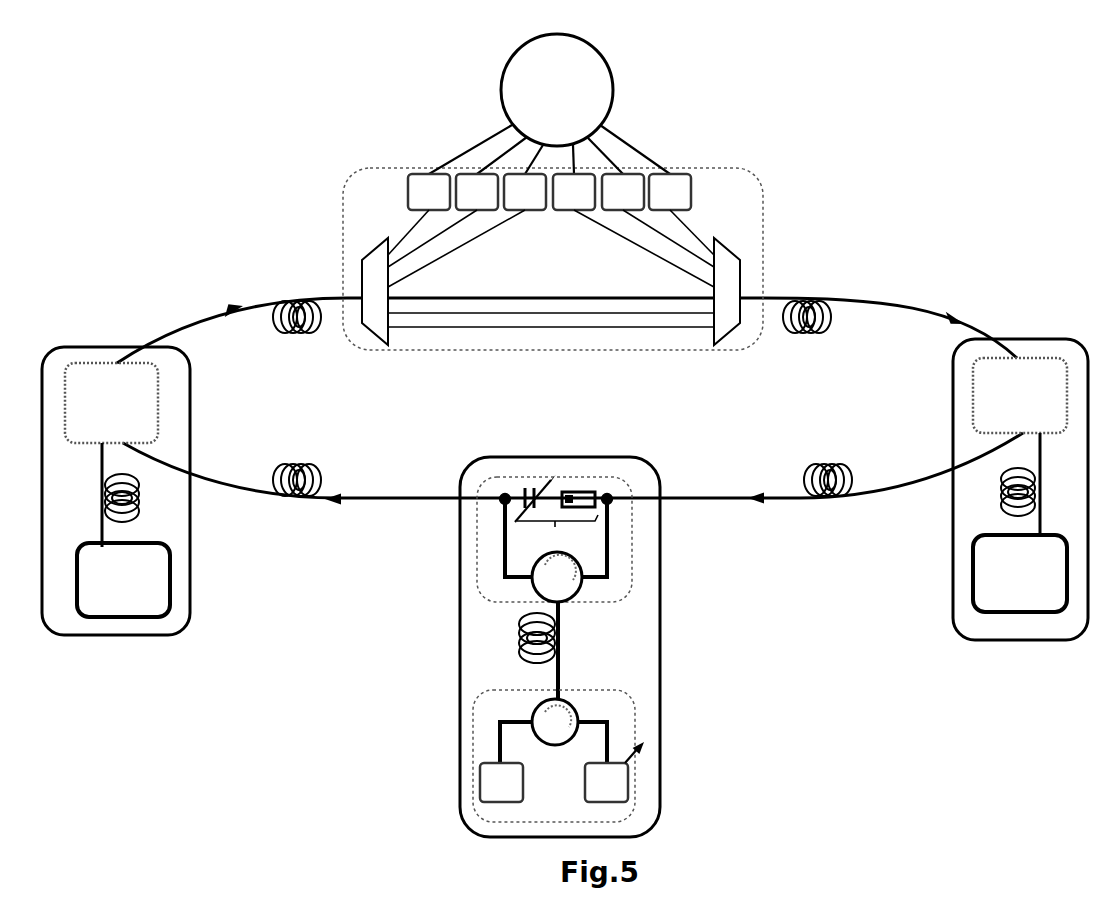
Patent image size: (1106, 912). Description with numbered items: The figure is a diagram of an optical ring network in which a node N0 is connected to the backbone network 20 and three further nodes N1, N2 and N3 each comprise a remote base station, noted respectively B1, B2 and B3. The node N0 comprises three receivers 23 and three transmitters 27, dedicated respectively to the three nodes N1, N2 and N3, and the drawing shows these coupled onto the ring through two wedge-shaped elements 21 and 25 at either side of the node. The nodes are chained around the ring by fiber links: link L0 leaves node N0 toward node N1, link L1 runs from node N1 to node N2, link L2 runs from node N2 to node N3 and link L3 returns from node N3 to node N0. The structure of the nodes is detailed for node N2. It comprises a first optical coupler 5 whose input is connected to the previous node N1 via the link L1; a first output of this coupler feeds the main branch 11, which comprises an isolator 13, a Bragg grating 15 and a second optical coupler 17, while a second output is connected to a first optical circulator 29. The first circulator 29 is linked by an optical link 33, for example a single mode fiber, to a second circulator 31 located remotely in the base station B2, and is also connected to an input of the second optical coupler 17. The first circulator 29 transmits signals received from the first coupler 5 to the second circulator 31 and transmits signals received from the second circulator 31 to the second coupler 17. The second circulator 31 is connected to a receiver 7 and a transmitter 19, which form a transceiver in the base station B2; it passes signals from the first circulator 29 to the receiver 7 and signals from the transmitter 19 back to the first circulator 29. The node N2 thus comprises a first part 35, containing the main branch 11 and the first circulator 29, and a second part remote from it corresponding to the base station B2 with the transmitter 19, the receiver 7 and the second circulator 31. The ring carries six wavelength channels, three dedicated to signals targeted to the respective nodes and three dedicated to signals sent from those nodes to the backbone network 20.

The first optical coupler 5 is at (606, 493).
The receiver 7 is at (480, 783).
The main branch 11 is at (557, 532).
The isolator 13 is at (573, 492).
The Bragg grating 15 is at (536, 489).
The second optical coupler 17 is at (504, 493).
The transmitter 19 is at (628, 773).
The backbone network 20 is at (605, 53).
The optical multiplexer 21 is at (366, 275).
The receivers 23 is at (515, 173).
The optical demultiplexer 25 is at (742, 275).
The transmitters 27 is at (593, 171).
The first optical circulator 29 is at (583, 582).
The second optical circulator 31 is at (532, 715).
The optical link 33 is at (517, 637).
The first part 35 is at (633, 537).
The node N0 is at (343, 200).
The node N1 is at (953, 578).
The node N2 is at (660, 683).
The node N3 is at (190, 513).
The fiber link 0 L0 is at (833, 322).
The link L1 is at (853, 480).
The fiber link 2 L2 is at (272, 478).
The fiber link 3 L3 is at (275, 322).
The remote base station B1 is at (1020, 573).
The remote base station B2 is at (636, 783).
The remote base station B3 is at (123, 580).